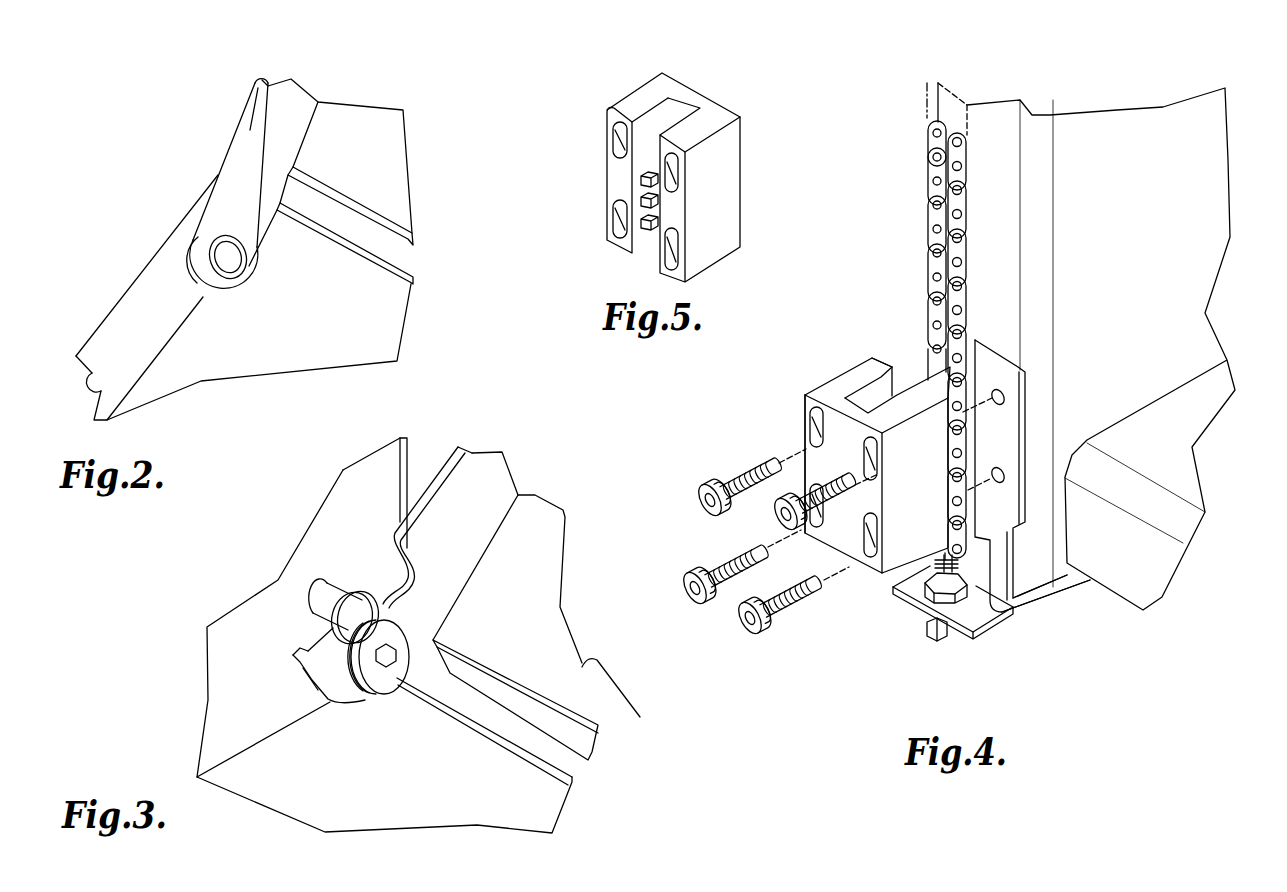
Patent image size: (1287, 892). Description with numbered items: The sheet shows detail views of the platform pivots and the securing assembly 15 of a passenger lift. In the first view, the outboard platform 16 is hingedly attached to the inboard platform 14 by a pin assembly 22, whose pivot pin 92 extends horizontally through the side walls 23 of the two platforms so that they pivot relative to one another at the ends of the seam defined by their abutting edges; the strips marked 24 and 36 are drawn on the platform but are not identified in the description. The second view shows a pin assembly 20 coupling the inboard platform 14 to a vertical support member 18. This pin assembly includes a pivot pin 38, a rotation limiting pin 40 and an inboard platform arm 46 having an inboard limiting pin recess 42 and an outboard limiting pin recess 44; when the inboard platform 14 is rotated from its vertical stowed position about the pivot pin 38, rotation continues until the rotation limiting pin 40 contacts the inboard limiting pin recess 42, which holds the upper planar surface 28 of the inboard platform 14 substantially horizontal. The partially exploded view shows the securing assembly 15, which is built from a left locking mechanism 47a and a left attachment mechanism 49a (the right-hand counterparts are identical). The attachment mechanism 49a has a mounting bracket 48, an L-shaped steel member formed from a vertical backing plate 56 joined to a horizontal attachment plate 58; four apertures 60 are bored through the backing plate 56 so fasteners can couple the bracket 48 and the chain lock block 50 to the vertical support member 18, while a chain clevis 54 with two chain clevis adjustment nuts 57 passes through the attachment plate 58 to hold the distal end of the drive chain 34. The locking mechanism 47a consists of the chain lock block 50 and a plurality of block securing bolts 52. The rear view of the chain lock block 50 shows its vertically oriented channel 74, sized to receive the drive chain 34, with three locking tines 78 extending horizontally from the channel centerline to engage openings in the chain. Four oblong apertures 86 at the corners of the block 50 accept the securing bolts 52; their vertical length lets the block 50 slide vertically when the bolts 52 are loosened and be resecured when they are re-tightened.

In FIG. 2, the inboard platform 14 is at (372, 339).
In FIG. 3, the inboard platform 14 is at (555, 522).
In FIG. 4, the securing assembly 15 is at (1035, 688).
In FIG. 2, the outboard platform 16 is at (360, 120).
In FIG. 3, the vertical support member 18 is at (388, 456).
In FIG. 4, the vertical support member 18 is at (1125, 132).
In FIG. 3, the pin assembly 20 is at (539, 446).
In FIG. 2, the pin assembly 22 is at (166, 214).
In FIG. 2, the side wall 23 is at (254, 133).
In FIG. 2, the lower channel strip 24 is at (411, 274).
In FIG. 3, the upper planar surface 28 is at (600, 663).
In FIG. 4, the drive chain 34 is at (928, 178).
In FIG. 2, the upper channel strip 36 is at (398, 246).
In FIG. 3, the pivot pin 38 is at (378, 694).
In FIG. 3, the rotation limiting pin 40 is at (323, 584).
In FIG. 3, the inboard limiting pin recess 42 is at (305, 648).
In FIG. 3, the outboard limiting pin recess 44 is at (380, 585).
In FIG. 3, the inboard platform arm 46 is at (300, 677).
In FIG. 4, the left locking mechanism 47a is at (837, 324).
In FIG. 4, the mounting bracket 48 is at (1045, 578).
In FIG. 4, the left attachment mechanism 49a is at (896, 648).
In FIG. 5, the chain lock block 50 is at (704, 90).
In FIG. 4, the chain lock block 50 is at (856, 358).
In FIG. 4, the block securing bolt 52 is at (697, 492).
In FIG. 4, the chain clevis 54 is at (966, 612).
In FIG. 4, the backing plate 56 is at (995, 347).
In FIG. 4, the chain clevis adjustment nut 57 is at (920, 597).
In FIG. 4, the attachment plate 58 is at (1007, 612).
In FIG. 4, the aperture 60 is at (1020, 487).
In FIG. 5, the channel 74 is at (642, 120).
In FIG. 4, the channel 74 is at (886, 382).
In FIG. 5, the locking tine 78 is at (641, 199).
In FIG. 5, the oblong aperture 86 is at (676, 168).
In FIG. 4, the oblong aperture 86 is at (813, 427).
In FIG. 2, the pivot pin 92 is at (240, 268).